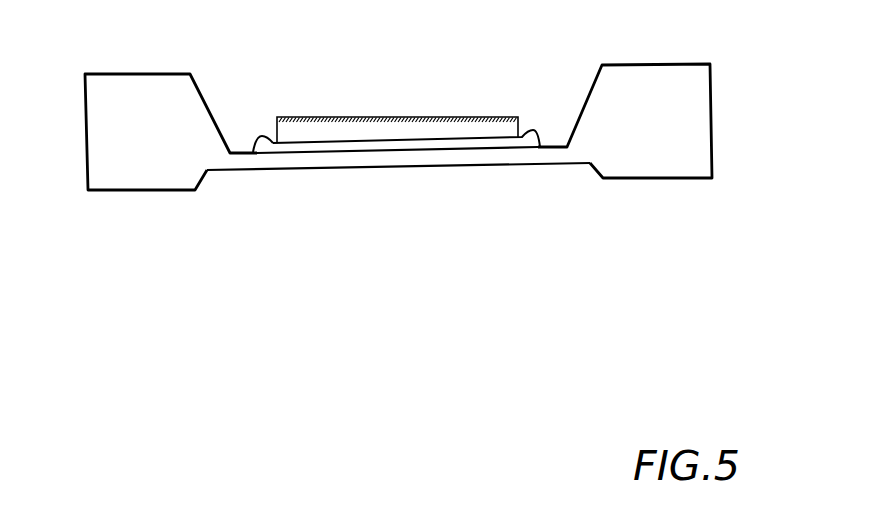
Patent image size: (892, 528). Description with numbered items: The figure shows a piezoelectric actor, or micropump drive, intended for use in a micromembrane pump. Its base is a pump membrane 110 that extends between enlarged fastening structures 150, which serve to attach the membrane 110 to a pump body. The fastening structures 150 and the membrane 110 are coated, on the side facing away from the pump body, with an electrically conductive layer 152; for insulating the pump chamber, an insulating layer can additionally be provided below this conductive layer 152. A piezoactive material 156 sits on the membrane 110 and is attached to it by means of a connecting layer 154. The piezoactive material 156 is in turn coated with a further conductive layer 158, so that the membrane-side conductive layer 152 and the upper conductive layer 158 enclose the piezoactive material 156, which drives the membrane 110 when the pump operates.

The pump membrane 110 is at (388, 165).
The fastening structures 150 is at (170, 162).
The electrically conductive layer 152 is at (682, 67).
The connecting layer 154 is at (263, 146).
The piezoactive material 156 is at (450, 135).
The conductive layer 158 is at (485, 117).